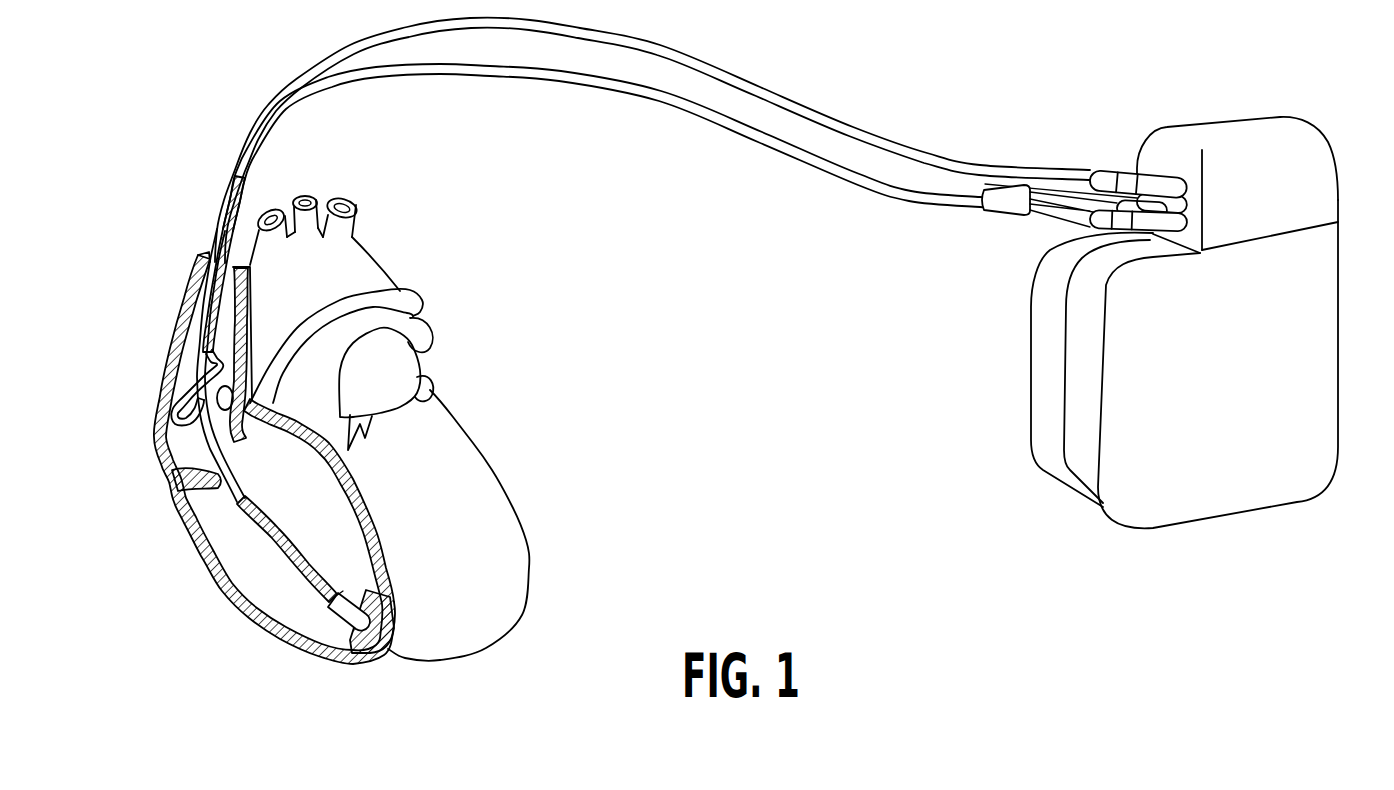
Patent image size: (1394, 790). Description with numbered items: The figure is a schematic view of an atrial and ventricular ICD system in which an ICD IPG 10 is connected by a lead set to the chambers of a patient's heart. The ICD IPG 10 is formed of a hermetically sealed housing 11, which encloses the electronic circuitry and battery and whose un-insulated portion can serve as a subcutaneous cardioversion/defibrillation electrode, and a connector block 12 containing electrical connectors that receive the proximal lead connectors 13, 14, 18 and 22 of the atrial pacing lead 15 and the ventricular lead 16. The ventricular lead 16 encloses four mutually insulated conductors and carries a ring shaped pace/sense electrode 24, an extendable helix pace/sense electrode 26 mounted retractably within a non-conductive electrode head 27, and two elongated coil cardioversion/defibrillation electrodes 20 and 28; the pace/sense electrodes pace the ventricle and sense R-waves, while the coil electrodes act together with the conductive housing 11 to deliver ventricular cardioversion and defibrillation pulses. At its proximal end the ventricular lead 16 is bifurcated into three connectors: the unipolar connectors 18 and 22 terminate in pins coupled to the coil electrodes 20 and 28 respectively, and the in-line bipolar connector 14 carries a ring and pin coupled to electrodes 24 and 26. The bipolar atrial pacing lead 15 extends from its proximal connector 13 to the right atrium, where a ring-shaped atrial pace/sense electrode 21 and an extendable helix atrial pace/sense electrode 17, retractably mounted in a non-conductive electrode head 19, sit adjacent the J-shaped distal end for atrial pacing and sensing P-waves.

The ICD IPG 10 is at (1210, 317).
The housing 11 is at (1120, 482).
The connector block 12 is at (1266, 128).
The proximal connector 13 is at (1128, 172).
The proximal connector 14 is at (1060, 215).
The atrial pacing lead 15 is at (853, 128).
The ventricular lead 16 is at (670, 166).
The extendable helix atrial pace/sense electrode 17 is at (243, 362).
The unipolar connector 18 is at (1147, 190).
The electrode head 19 is at (209, 296).
The coil cardioversion/defibrillation electrode 20 is at (283, 463).
The ring-shaped atrial pace/sense electrode 21 is at (200, 400).
The unipolar connector 22 is at (1166, 146).
The ring shaped pace/sense electrode 24 is at (330, 603).
The extendable helix pace/sense electrode 26 is at (370, 633).
The electrode head 27 is at (340, 605).
The coil cardioversion/defibrillation electrode 28 is at (240, 200).